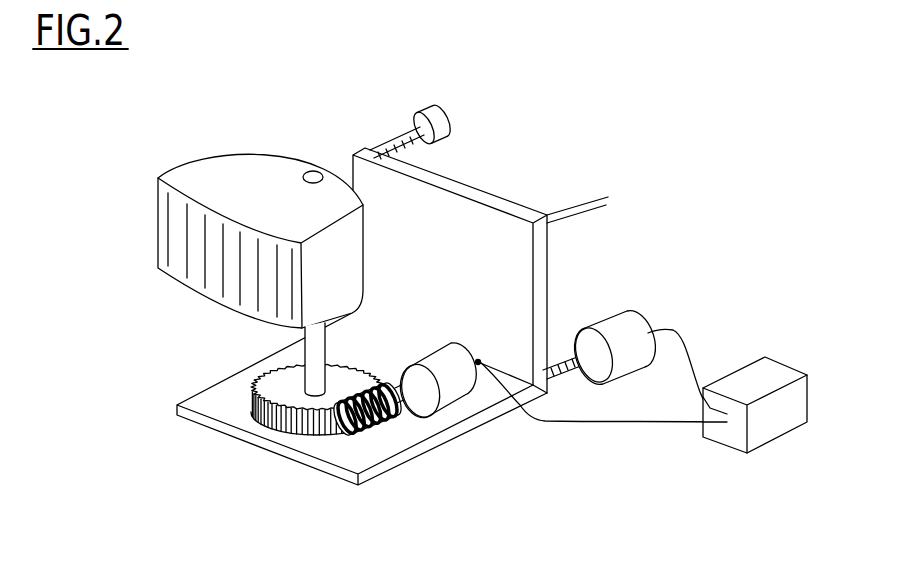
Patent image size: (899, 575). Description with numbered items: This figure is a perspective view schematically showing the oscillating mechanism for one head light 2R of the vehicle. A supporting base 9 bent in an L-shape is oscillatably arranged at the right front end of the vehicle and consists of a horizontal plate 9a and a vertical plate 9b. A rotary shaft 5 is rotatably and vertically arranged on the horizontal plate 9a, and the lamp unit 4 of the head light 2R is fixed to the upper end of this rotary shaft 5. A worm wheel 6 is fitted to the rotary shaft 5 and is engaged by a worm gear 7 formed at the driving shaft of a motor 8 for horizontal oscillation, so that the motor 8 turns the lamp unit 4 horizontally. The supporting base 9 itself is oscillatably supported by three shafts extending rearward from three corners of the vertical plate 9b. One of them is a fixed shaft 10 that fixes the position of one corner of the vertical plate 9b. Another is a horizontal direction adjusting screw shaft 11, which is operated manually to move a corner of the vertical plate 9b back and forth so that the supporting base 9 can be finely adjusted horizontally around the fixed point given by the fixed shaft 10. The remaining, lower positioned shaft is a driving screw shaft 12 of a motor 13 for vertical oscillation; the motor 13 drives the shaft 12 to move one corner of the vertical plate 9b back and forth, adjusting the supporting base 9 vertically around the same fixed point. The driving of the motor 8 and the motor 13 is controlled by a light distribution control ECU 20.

The head light 2R is at (215, 210).
The lamp unit 4 is at (237, 154).
The rotary shaft 5 is at (316, 348).
The worm wheel 6 is at (257, 420).
The worm gear 7 is at (385, 418).
The motor for horizontal oscillation 8 is at (450, 393).
The supporting base 9 is at (402, 343).
The horizontal plate 9a is at (328, 467).
The vertical plate 9b is at (476, 189).
The fixed shaft 10 is at (576, 197).
The horizontal direction adjusting screw shaft 11 is at (400, 133).
The driving screw shaft 12 is at (560, 362).
The motor for vertical oscillation 13 is at (606, 313).
The light distribution control ECU 20 is at (768, 378).